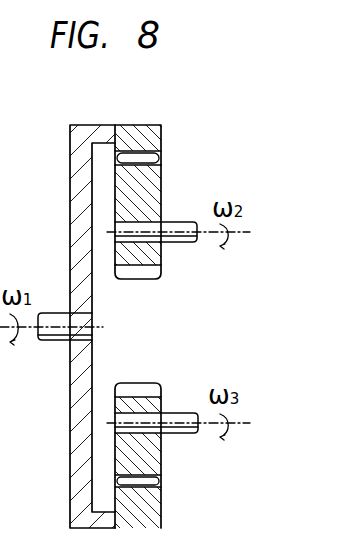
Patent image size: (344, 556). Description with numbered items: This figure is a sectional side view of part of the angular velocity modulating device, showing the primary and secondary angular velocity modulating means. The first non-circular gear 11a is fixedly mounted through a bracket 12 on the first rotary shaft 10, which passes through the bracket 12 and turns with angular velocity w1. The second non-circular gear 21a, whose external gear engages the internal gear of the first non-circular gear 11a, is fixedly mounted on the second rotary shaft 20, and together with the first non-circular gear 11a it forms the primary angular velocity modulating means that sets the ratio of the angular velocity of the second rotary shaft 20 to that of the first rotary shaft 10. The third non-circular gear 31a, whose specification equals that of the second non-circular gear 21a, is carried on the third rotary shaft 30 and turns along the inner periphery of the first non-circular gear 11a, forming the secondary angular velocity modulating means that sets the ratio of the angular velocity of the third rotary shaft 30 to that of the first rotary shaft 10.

The first rotary shaft 10 is at (54, 341).
The first non-circular gear 11a is at (143, 135).
The bracket 12 is at (83, 173).
The second rotary shaft 20 is at (178, 242).
The second non-circular gear 21a is at (153, 182).
The third rotary shaft 30 is at (183, 430).
The third non-circular gear 31a is at (152, 457).